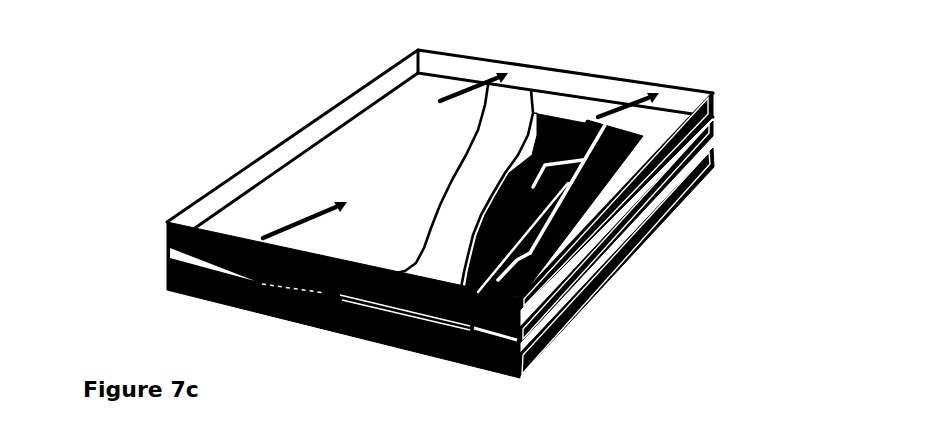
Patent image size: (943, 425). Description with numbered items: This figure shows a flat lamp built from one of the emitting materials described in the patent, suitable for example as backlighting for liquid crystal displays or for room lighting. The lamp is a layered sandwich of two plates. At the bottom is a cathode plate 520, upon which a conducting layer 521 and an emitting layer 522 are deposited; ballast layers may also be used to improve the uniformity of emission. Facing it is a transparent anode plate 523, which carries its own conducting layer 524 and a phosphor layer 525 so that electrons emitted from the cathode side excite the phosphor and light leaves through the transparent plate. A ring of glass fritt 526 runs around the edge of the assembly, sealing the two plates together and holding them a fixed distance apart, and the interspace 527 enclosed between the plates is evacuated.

The cathode plate 520 is at (558, 321).
The conducting layer 521 is at (527, 248).
The emitting layer 522 is at (705, 143).
The transparent anode plate 523 is at (332, 118).
The conducting layer 524 is at (256, 179).
The phosphor layer 525 is at (279, 189).
The ring of glass fritt 526 is at (165, 255).
The interspace 527 is at (714, 133).